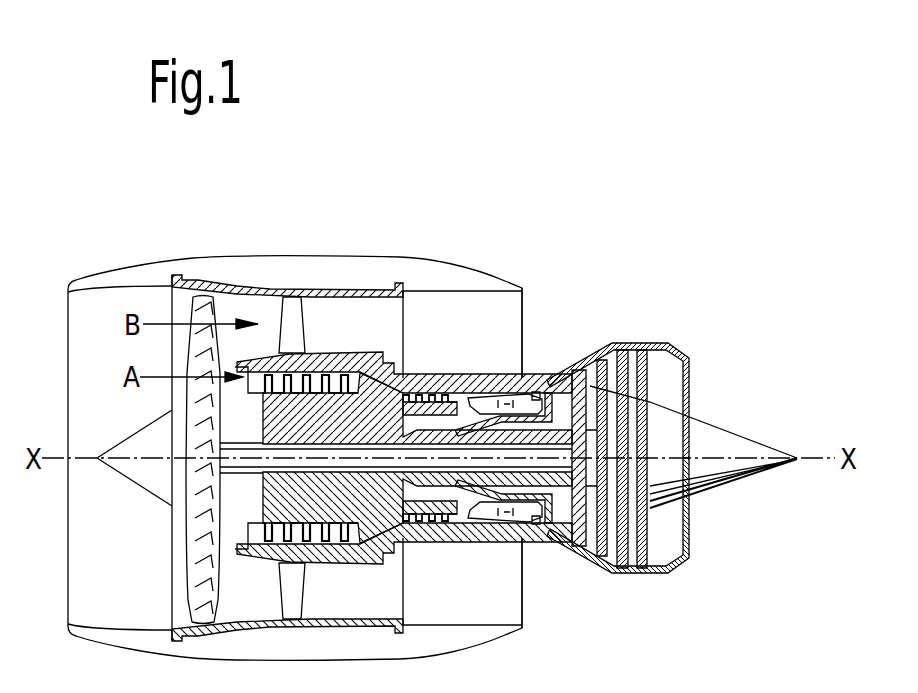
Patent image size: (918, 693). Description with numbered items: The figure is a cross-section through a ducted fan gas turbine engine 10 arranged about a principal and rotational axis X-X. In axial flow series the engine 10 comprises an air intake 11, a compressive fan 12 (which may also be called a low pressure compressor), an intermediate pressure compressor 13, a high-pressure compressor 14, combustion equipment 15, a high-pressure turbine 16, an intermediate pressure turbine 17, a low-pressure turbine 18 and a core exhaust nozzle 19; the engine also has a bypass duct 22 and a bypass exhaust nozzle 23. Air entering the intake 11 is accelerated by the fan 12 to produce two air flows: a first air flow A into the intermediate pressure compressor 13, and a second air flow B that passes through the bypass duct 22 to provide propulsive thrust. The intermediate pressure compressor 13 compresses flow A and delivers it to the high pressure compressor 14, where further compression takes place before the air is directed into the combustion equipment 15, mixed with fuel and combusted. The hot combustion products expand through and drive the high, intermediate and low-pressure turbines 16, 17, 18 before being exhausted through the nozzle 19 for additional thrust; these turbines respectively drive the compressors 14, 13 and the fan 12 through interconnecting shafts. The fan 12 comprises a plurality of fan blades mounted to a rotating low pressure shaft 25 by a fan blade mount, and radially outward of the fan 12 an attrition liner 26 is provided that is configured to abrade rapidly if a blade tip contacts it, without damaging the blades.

The ducted fan gas turbine engine 10 is at (135, 232).
The air intake 11 is at (118, 289).
The compressive fan 12 is at (190, 578).
The intermediate pressure compressor 13 is at (320, 542).
The high-pressure compressor 14 is at (433, 392).
The combustion equipment 15 is at (487, 522).
The high-pressure turbine 16 is at (540, 540).
The intermediate pressure turbine 17 is at (580, 375).
The low-pressure turbine 18 is at (597, 565).
The core exhaust nozzle 19 is at (682, 348).
The bypass duct 22 is at (491, 328).
The bypass exhaust nozzle 23 is at (522, 288).
The low pressure shaft 25 is at (257, 468).
The attrition liner 26 is at (227, 296).